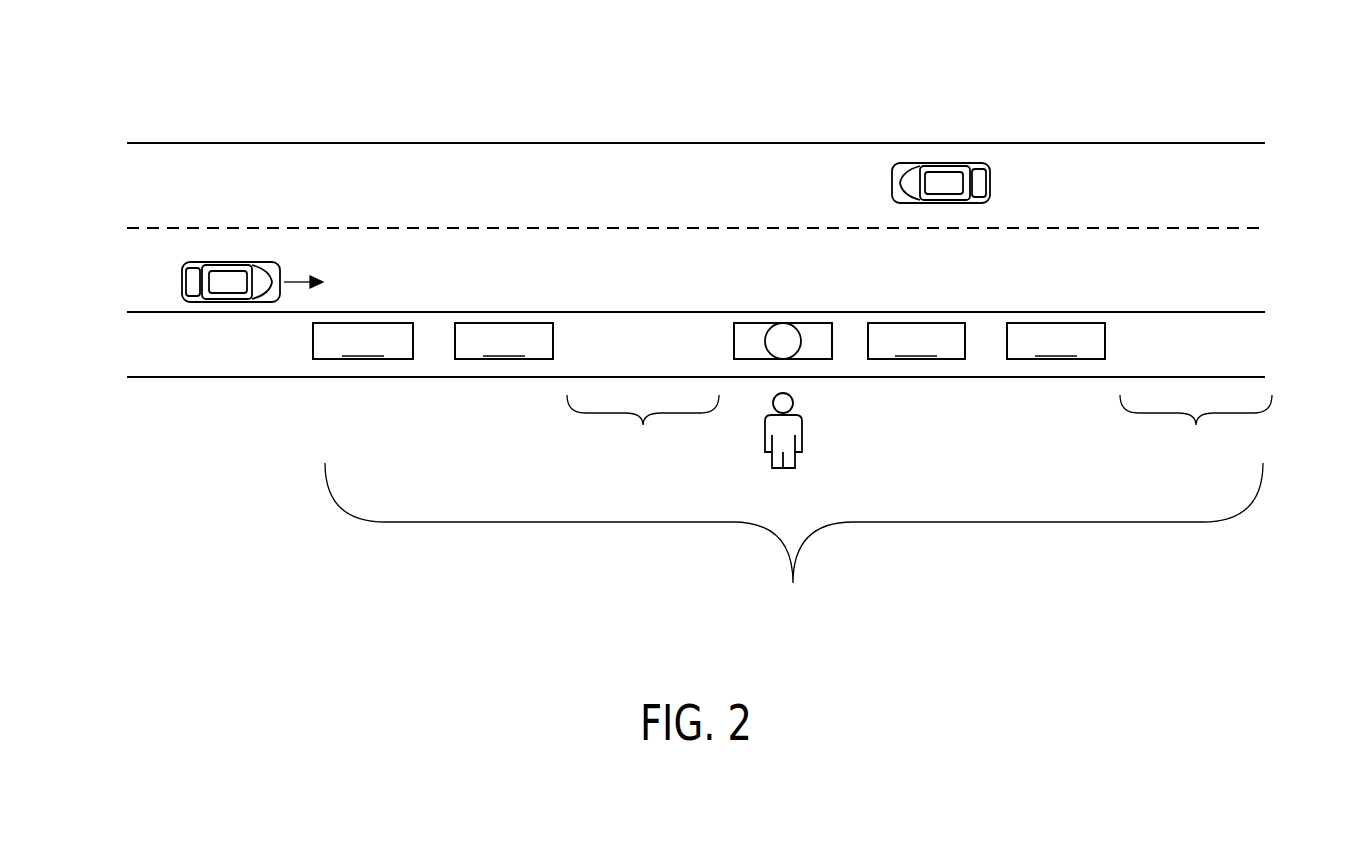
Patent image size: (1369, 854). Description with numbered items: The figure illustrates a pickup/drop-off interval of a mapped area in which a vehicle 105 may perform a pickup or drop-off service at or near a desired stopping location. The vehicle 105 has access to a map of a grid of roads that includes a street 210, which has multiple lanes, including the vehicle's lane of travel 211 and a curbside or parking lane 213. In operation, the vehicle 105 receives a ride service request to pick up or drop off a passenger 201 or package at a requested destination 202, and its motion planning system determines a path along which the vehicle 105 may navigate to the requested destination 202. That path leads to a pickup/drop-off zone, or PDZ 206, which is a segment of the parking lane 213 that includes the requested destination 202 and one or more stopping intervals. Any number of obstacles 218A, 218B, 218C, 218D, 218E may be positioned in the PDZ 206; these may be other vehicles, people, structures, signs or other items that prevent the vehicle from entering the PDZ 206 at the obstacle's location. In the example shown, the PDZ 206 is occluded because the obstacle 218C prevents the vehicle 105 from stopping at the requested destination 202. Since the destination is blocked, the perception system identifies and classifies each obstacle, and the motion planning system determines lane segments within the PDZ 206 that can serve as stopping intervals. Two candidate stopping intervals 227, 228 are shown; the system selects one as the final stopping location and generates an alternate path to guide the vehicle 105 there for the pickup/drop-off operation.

The street 210 is at (291, 133).
The lane of travel 211 is at (1280, 273).
The parking lane 213 is at (1280, 350).
The vehicle 105 is at (207, 303).
The obstacle 218A is at (363, 341).
The obstacle 218B is at (504, 341).
The obstacle 218C is at (745, 323).
The obstacle 218D is at (916, 341).
The obstacle 218E is at (1056, 341).
The requested destination 202 is at (798, 326).
The passenger 201 is at (797, 452).
The candidate stopping interval 227 is at (643, 435).
The candidate stopping interval 228 is at (1196, 434).
The pickup/drop-off zone (PDZ) 206 is at (794, 548).